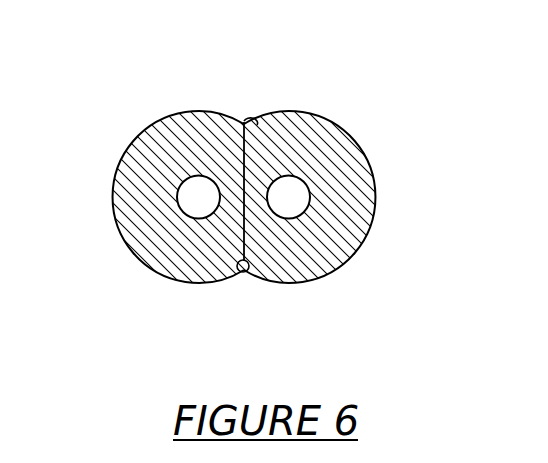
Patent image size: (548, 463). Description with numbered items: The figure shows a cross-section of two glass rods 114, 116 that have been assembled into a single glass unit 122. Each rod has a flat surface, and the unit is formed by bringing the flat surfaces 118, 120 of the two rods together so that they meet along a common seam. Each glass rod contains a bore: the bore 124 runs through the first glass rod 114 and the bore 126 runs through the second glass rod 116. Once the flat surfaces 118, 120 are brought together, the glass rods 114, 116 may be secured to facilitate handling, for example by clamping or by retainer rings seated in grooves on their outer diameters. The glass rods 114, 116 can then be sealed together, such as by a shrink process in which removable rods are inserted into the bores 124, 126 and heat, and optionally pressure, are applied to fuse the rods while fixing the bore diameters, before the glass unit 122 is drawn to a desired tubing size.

The glass rod 114 is at (145, 123).
The glass rod 116 is at (352, 142).
The flat surface 118 is at (250, 118).
The flat surface 120 is at (236, 267).
The glass unit 122 is at (307, 98).
The bore 124 is at (197, 196).
The bore 126 is at (289, 197).